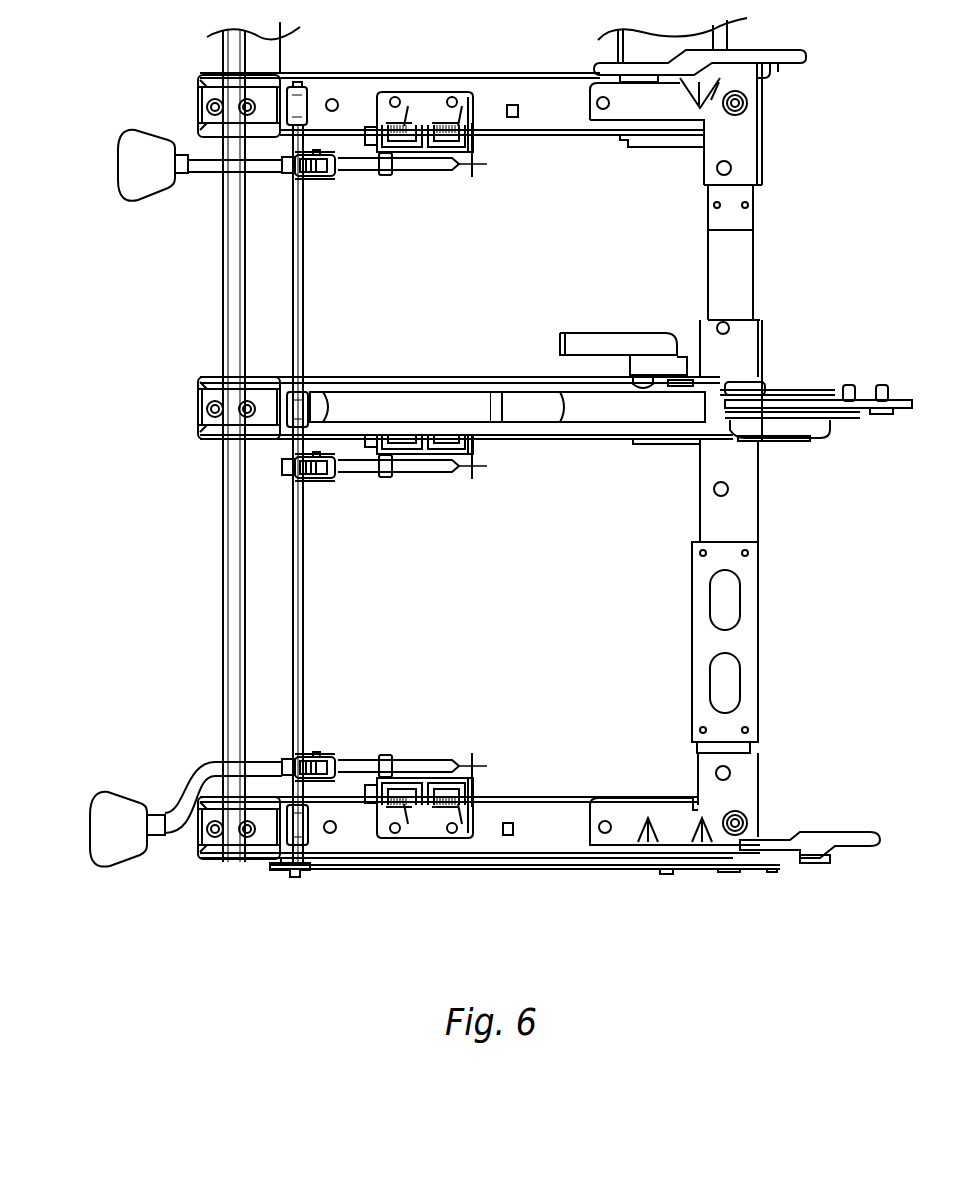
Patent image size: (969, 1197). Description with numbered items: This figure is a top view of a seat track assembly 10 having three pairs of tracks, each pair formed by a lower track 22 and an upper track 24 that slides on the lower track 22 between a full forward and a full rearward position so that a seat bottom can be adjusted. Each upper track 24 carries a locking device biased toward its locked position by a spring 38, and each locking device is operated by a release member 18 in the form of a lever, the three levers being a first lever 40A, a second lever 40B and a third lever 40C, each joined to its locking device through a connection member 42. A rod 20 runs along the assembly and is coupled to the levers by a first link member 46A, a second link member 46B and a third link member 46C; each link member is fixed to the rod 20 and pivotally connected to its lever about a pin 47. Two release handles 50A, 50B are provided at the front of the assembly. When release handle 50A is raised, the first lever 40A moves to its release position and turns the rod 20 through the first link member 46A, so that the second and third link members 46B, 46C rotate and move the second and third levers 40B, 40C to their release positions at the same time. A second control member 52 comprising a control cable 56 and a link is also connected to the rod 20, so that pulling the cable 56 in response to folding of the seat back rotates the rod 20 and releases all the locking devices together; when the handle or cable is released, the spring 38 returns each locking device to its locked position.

The seat track assembly 10 is at (812, 222).
The release member 18 is at (366, 172).
The rod 20 is at (293, 539).
The lower track 22 is at (203, 95).
The upper track 24 is at (567, 135).
The spring 38 is at (490, 768).
The first lever 40A is at (437, 758).
The second lever 40B is at (428, 475).
The third lever 40C is at (425, 171).
The connection member 42 is at (390, 754).
The first link member 46A is at (330, 754).
The second link member 46B is at (317, 479).
The third link member 46C is at (316, 178).
The pin 47 is at (316, 752).
The release handle 50A is at (100, 805).
The release handle 50B is at (122, 166).
The second control member 52 is at (292, 880).
The control cable 56 is at (393, 869).